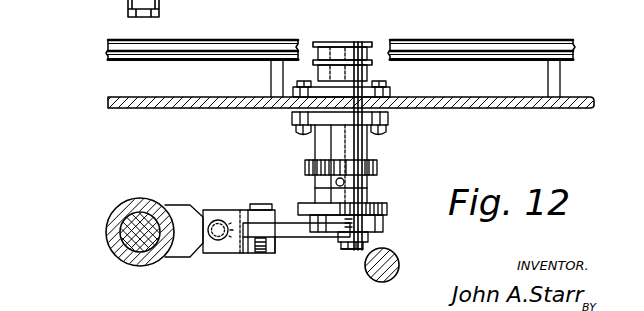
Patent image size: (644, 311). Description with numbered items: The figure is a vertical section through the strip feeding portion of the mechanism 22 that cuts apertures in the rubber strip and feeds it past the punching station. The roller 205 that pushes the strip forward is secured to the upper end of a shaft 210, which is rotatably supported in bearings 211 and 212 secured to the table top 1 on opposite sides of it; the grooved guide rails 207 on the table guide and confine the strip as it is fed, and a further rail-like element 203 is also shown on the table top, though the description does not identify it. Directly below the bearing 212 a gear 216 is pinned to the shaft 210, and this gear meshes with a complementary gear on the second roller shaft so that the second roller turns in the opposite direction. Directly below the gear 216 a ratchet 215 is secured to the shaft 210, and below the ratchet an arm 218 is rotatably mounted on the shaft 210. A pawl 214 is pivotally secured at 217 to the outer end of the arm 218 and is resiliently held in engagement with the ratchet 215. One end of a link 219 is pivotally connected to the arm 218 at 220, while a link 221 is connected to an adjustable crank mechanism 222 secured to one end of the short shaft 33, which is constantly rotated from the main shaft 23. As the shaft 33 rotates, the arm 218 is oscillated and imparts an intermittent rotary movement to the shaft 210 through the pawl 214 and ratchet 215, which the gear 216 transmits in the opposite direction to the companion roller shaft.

The table top 1 is at (178, 97).
The left rail 203 is at (266, 34).
The roller 205 is at (356, 42).
The grooved guide rails 207 is at (495, 38).
The bearing 211 is at (318, 72).
The shaft 210 is at (318, 142).
The bearing 212 is at (364, 148).
The gear 216 is at (305, 167).
The mechanism for cutting apertures and feeding the strip 22 is at (378, 183).
The ratchet 215 is at (300, 206).
The pivot 217 is at (376, 200).
The arm 218 is at (387, 223).
The pawl 214 is at (313, 238).
The link 219 is at (296, 238).
The pivot connection 220 is at (352, 250).
The link 221 is at (196, 196).
The adjustable crank mechanism 222 is at (147, 264).
The shaft 33 is at (116, 233).
The shaft 23 is at (400, 266).